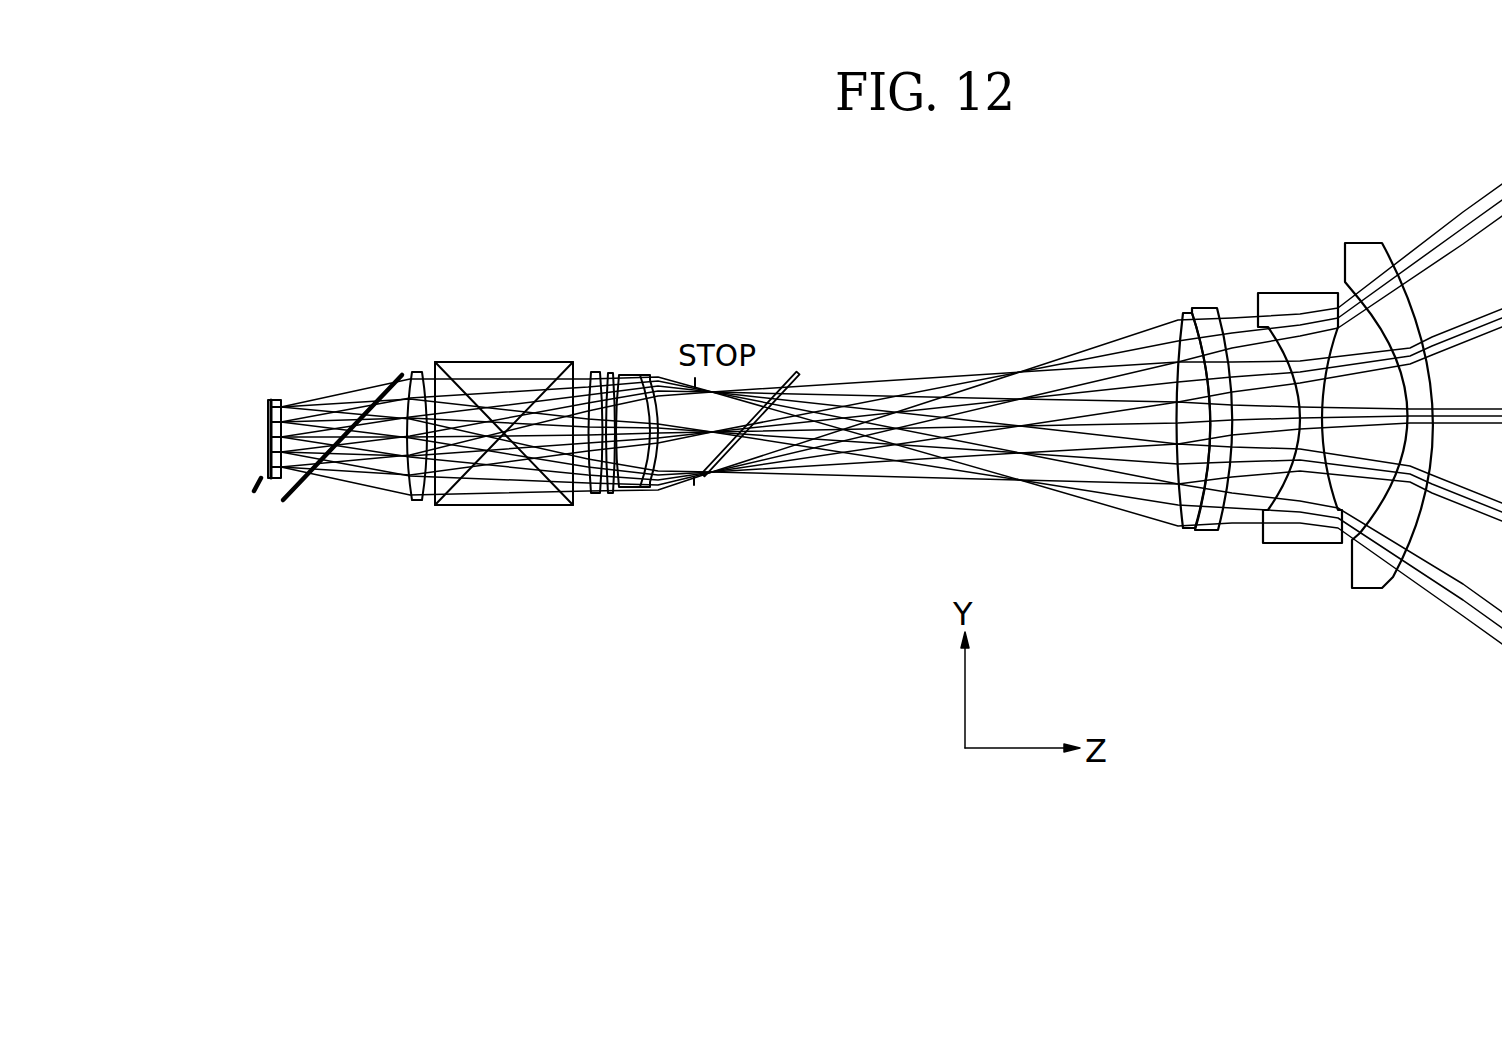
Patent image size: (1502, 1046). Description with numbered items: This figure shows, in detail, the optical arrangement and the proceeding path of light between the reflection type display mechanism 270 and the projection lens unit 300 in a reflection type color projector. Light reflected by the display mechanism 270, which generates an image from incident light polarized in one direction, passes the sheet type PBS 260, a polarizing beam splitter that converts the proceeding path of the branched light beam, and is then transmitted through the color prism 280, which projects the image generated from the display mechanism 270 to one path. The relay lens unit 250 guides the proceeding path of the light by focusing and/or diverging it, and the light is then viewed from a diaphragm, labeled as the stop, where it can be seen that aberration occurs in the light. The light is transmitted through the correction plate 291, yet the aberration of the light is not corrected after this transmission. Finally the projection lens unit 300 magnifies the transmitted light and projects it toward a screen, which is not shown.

The reflection type display mechanism 270 is at (256, 494).
The sheet type PBS 260 is at (292, 494).
The color prism 280 is at (472, 508).
The relay lens unit 250 is at (617, 515).
The correction plate 291 is at (695, 483).
The projection lens unit 300 is at (1305, 580).